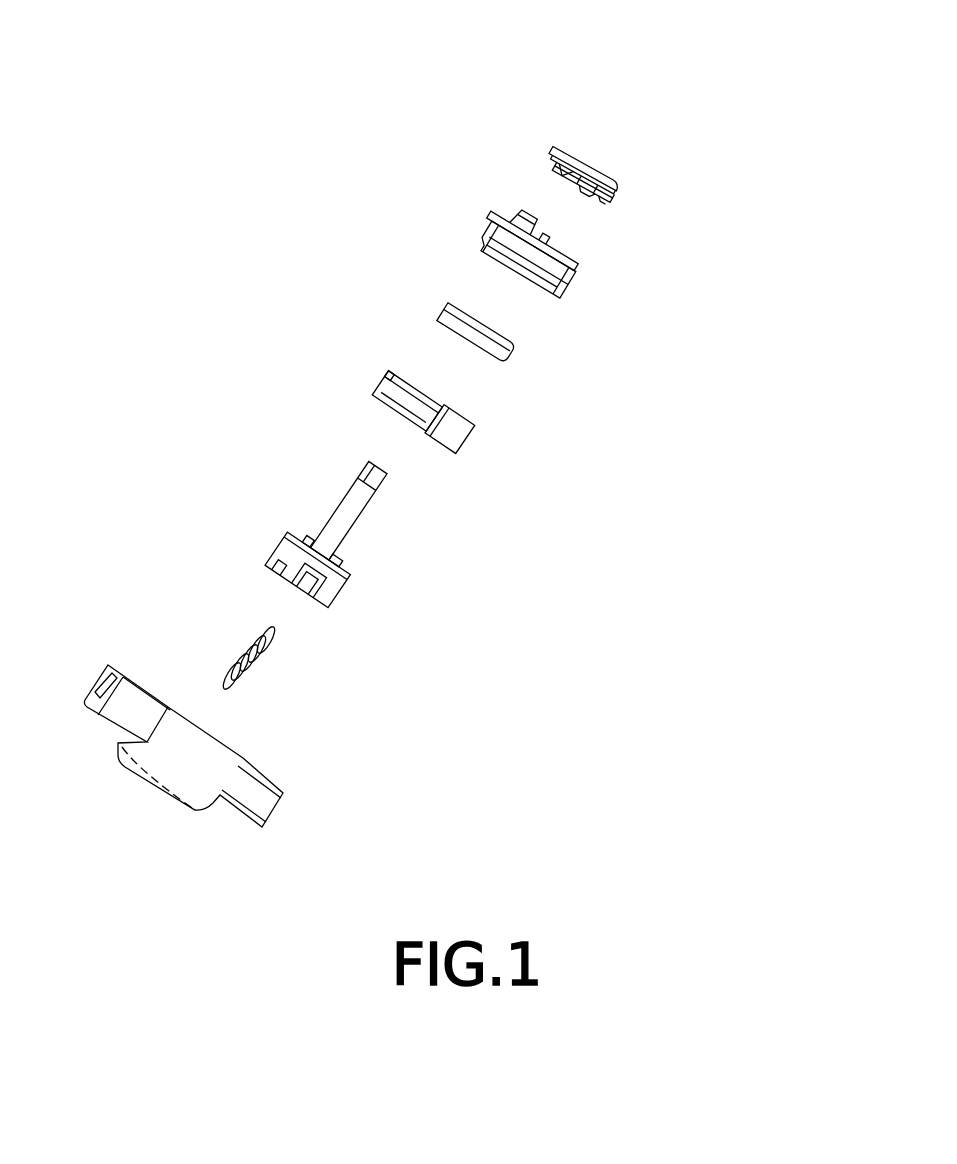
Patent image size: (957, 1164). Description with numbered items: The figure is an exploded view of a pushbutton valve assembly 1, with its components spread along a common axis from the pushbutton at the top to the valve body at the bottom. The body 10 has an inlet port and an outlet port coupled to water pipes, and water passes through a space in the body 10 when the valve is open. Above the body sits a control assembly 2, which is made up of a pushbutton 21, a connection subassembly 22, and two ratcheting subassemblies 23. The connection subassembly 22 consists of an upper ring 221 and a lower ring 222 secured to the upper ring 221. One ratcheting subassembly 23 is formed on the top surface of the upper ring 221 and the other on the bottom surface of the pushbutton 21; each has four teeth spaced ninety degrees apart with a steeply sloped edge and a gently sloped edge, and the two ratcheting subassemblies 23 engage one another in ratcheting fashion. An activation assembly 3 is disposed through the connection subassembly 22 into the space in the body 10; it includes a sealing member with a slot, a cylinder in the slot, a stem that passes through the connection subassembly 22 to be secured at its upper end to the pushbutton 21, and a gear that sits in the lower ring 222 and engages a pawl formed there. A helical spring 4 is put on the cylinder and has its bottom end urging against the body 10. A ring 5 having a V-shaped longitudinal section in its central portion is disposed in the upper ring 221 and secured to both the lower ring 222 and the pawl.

The pushbutton valve assembly 1 is at (685, 671).
The control assembly 2 is at (623, 137).
The pushbutton 21 is at (641, 199).
The connection subassembly 22 is at (595, 365).
The upper ring 221 is at (598, 277).
The lower ring 222 is at (472, 446).
The ratcheting subassembly 23 is at (520, 180).
The ring 5 is at (524, 362).
The activation assembly 3 is at (360, 527).
The helical spring 4 is at (278, 664).
The body 10 is at (204, 776).